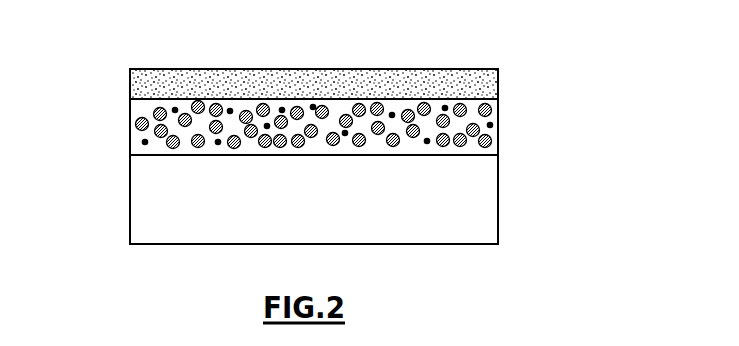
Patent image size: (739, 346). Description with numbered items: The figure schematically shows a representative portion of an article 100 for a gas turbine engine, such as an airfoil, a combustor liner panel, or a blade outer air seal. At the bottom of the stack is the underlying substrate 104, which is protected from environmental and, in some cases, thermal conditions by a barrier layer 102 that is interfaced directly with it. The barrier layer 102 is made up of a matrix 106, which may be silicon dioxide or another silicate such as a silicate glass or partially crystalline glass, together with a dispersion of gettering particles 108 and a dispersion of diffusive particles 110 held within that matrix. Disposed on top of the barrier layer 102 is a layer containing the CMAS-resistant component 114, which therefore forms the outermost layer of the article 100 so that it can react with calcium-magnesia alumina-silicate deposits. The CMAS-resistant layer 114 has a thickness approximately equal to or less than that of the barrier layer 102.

The article 100 is at (108, 196).
The barrier layer 102 is at (519, 130).
The substrate 104 is at (498, 213).
The matrix 106 is at (208, 145).
The gettering particles 108 is at (135, 126).
The diffusive particles 110 is at (144, 145).
The CMAS-resistant component 114 is at (499, 76).